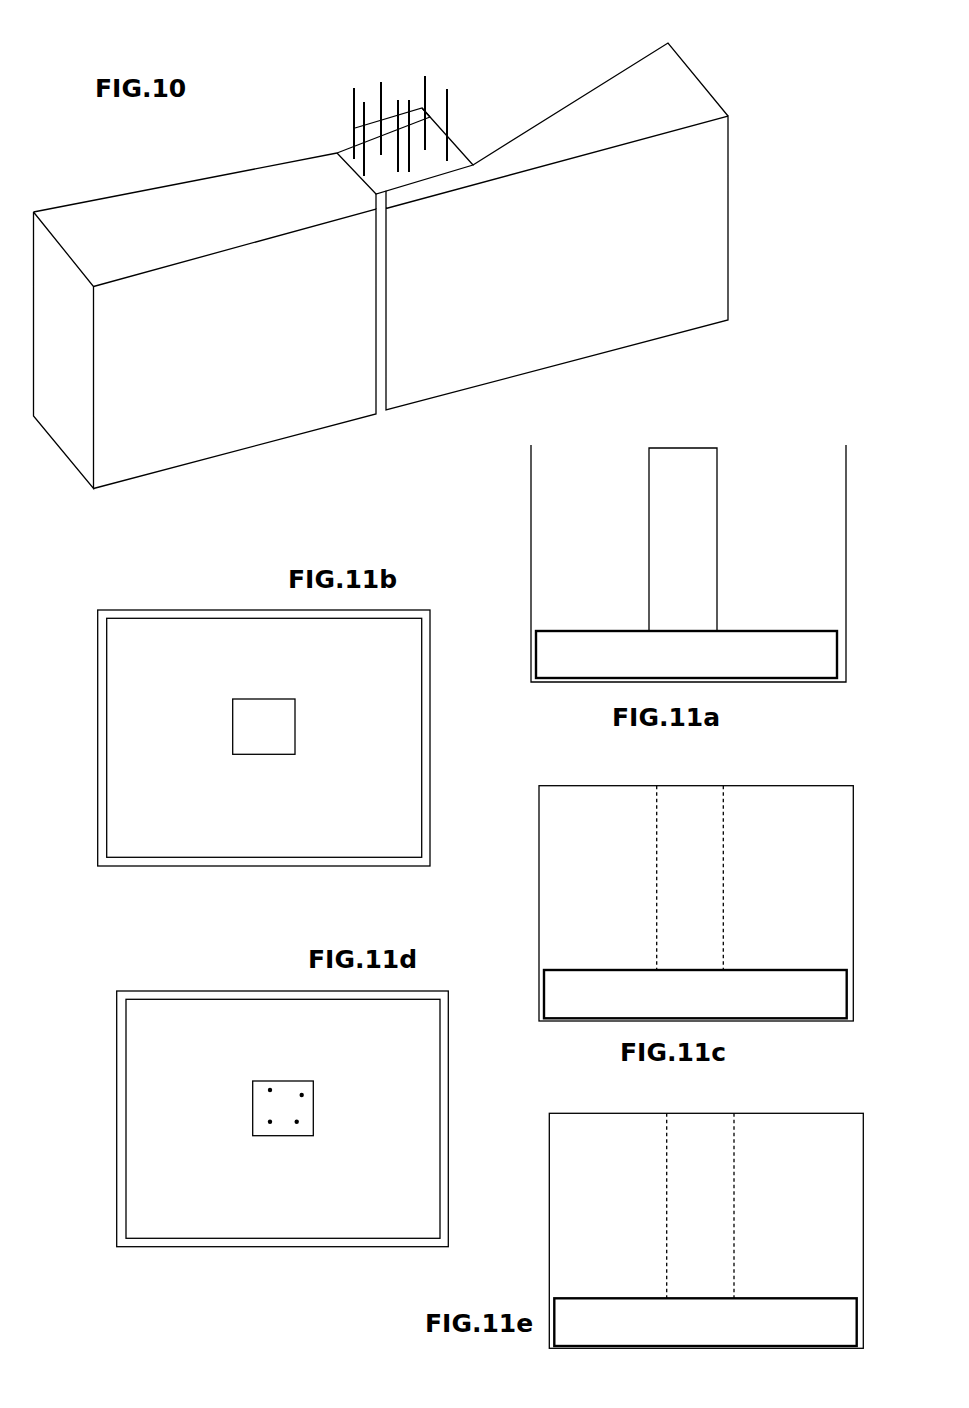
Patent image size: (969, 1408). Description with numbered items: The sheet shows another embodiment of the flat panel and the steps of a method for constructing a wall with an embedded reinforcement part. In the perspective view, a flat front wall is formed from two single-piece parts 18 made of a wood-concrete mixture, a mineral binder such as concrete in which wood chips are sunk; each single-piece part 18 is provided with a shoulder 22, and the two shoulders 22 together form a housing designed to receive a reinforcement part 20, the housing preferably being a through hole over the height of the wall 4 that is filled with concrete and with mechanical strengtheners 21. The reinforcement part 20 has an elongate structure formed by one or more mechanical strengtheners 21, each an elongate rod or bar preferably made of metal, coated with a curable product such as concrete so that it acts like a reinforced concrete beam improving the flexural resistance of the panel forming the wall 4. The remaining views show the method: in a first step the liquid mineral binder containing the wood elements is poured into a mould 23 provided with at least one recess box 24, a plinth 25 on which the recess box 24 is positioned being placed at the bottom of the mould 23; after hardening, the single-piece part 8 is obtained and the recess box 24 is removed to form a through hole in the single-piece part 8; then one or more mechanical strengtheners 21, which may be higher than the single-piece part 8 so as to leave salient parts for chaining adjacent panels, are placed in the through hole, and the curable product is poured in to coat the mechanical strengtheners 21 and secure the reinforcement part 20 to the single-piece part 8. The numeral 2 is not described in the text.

In FIG. 11a, the anchor assembly 2 is at (855, 523).
In FIG. 10, the wall 4 is at (735, 224).
In FIG. 11c, the single-piece part 8 is at (815, 920).
In FIG. 11d, the single-piece part 8 is at (402, 1065).
In FIG. 11e, the single-piece part 8 is at (824, 1247).
In FIG. 10, the single-piece part 18 is at (196, 226).
In FIG. 10, the reinforcement part 20 is at (460, 82).
In FIG. 11d, the reinforcement part 20 is at (302, 1093).
In FIG. 10, the mechanical strengthener 21 is at (423, 104).
In FIG. 10, the shoulder 22 is at (347, 137).
In FIG. 11a, the mould 23 is at (843, 667).
In FIG. 11b, the mould 23 is at (98, 818).
In FIG. 11c, the mould 23 is at (850, 1007).
In FIG. 11d, the mould 23 is at (118, 1203).
In FIG. 11e, the mould 23 is at (865, 1335).
In FIG. 11a, the recess box 24 is at (677, 455).
In FIG. 11b, the recess box 24 is at (278, 713).
In FIG. 11c, the recess box 24 is at (683, 793).
In FIG. 11e, the recess box 24 is at (693, 1122).
In FIG. 11a, the plinth 25 is at (572, 638).
In FIG. 11b, the plinth 25 is at (130, 722).
In FIG. 11c, the plinth 25 is at (578, 978).
In FIG. 11d, the plinth 25 is at (150, 1103).
In FIG. 11e, the plinth 25 is at (588, 1305).